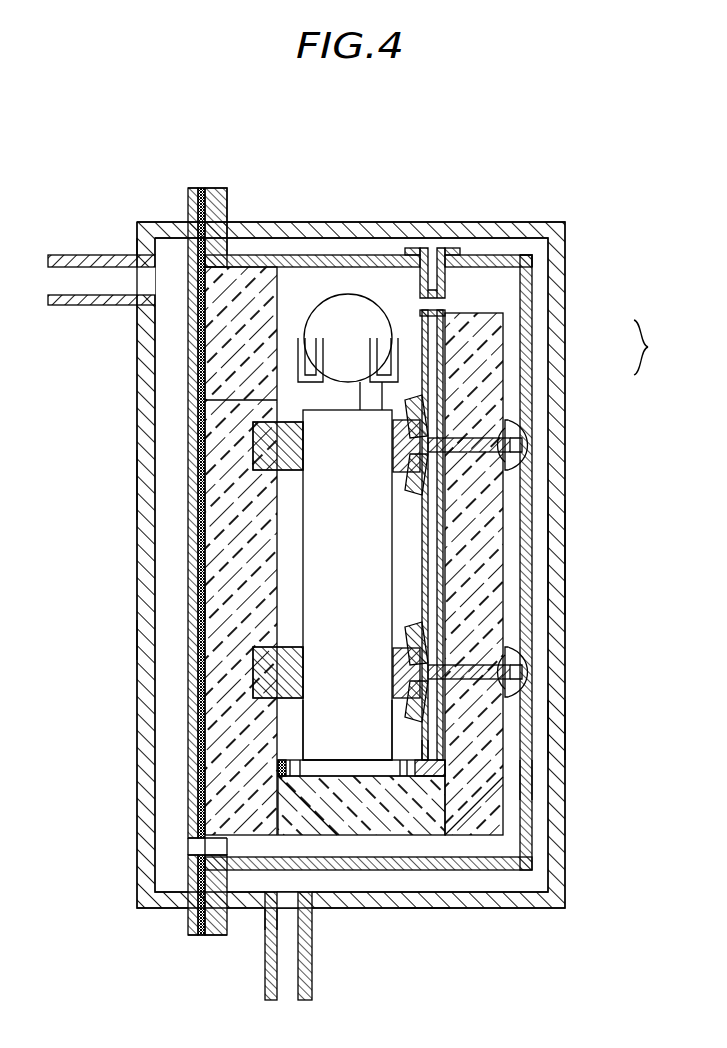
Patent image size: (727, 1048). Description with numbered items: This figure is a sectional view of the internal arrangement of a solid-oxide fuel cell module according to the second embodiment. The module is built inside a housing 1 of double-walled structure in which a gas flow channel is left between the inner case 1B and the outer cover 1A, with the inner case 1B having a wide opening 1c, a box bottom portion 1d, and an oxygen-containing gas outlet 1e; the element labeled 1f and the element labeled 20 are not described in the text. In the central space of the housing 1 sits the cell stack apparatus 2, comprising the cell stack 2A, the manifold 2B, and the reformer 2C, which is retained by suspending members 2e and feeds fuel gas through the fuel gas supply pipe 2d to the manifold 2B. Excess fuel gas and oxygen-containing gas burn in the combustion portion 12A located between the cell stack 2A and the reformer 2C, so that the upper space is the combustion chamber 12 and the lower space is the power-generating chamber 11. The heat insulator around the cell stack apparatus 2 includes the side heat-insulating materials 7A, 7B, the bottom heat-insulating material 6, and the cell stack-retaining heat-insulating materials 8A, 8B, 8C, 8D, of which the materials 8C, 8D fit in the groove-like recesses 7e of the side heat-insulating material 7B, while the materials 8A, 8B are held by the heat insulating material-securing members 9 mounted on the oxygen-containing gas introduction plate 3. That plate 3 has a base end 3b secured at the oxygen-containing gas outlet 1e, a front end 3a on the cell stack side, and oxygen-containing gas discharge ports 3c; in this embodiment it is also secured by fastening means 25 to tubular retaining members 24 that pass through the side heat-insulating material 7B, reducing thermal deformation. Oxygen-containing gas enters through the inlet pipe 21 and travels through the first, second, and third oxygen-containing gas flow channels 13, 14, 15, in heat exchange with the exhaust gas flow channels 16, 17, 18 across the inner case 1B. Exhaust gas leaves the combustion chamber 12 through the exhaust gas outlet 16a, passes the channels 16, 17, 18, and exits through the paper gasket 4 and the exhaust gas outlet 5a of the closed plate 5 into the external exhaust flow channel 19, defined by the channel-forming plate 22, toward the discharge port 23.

The housing 1 is at (649, 347).
The outer cover 1A is at (222, 190).
The inner case 1B is at (416, 520).
The wide opening 1c is at (200, 283).
The box bottom portion 1d is at (520, 561).
The oxygen-containing gas outlet 1e is at (432, 275).
The wall portion 1f is at (288, 893).
The cell stack apparatus 2 is at (256, 517).
The cell stack 2A is at (347, 585).
The manifold 2B is at (347, 730).
The reformer 2C is at (348, 338).
The fuel gas supply pipe 2d is at (368, 398).
The suspending member 2e is at (300, 340).
The oxygen-containing gas introduction plate 3 is at (374, 472).
The front end 3a is at (418, 762).
The base end 3b is at (423, 270).
The oxygen-containing gas discharge port 3c is at (422, 745).
The paper gasket 4 is at (201, 188).
The closed plate 5 is at (131, 521).
The exhaust gas outlet 5a is at (195, 847).
The bottom heat-insulating material 6 is at (361, 805).
The side heat-insulating material 7A is at (474, 574).
The side heat-insulating material 7B is at (241, 551).
The groove-like recess 7e is at (265, 440).
The cell stack-retaining heat-insulating material 8A is at (396, 685).
The cell stack-retaining heat-insulating material 8B is at (396, 460).
The cell stack-retaining heat-insulating material 8C is at (300, 664).
The cell stack-retaining heat-insulating material 8D is at (300, 437).
The heat insulating material-securing member 9 is at (417, 418).
The power-generating chamber 11 is at (292, 607).
The combustion chamber 12 is at (277, 551).
The combustion portion 12A is at (348, 405).
The first oxygen-containing gas flow channel 13 is at (422, 890).
The second oxygen-containing gas flow channel 14 is at (545, 735).
The third oxygen-containing gas flow channel 15 is at (318, 258).
The first exhaust gas flow channel 16 is at (503, 283).
The exhaust gas outlet 16a is at (437, 300).
The second exhaust gas flow channel 17 is at (515, 780).
The third exhaust gas flow channel 18 is at (352, 862).
The external exhaust flow channel 19 is at (172, 640).
The case 20 is at (345, 543).
The oxygen-containing gas inlet pipe 21 is at (262, 986).
The external exhaust flow channel-forming plate 22 is at (150, 486).
The discharge port 23 is at (90, 255).
The tubular retaining member 24 is at (514, 545).
The fastening means 25 is at (522, 448).